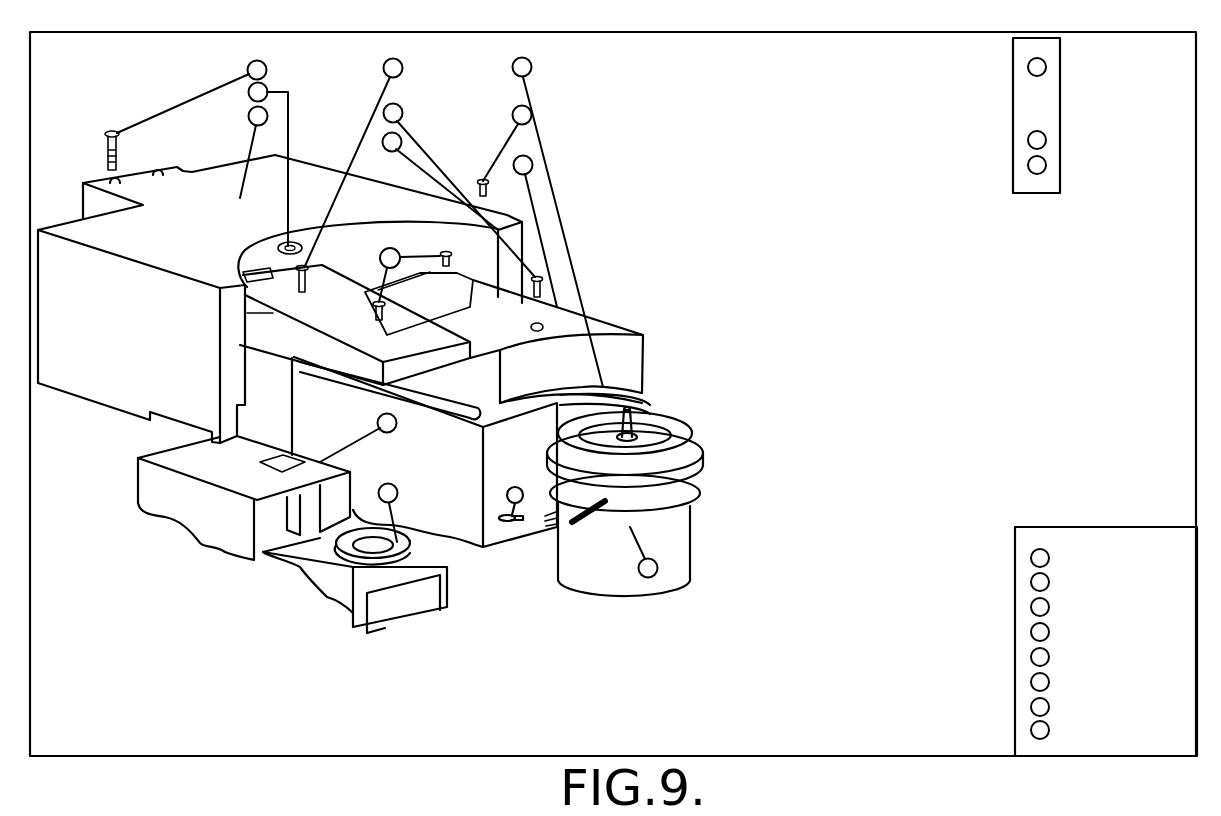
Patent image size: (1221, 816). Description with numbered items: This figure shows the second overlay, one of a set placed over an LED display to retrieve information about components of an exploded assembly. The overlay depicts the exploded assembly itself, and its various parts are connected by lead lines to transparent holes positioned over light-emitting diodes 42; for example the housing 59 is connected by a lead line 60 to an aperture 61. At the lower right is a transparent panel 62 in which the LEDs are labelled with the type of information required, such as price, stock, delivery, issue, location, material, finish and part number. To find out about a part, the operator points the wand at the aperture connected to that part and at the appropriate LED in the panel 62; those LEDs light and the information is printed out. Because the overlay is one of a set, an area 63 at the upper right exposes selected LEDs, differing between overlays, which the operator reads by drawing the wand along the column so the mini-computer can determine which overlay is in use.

The housing 59 is at (195, 243).
The lead line 60 is at (250, 148).
The aperture 61 is at (248, 117).
The transparent panel 62 is at (1025, 588).
The area 63 is at (1025, 110).
The light-emitting diodes 42 is at (1042, 549).